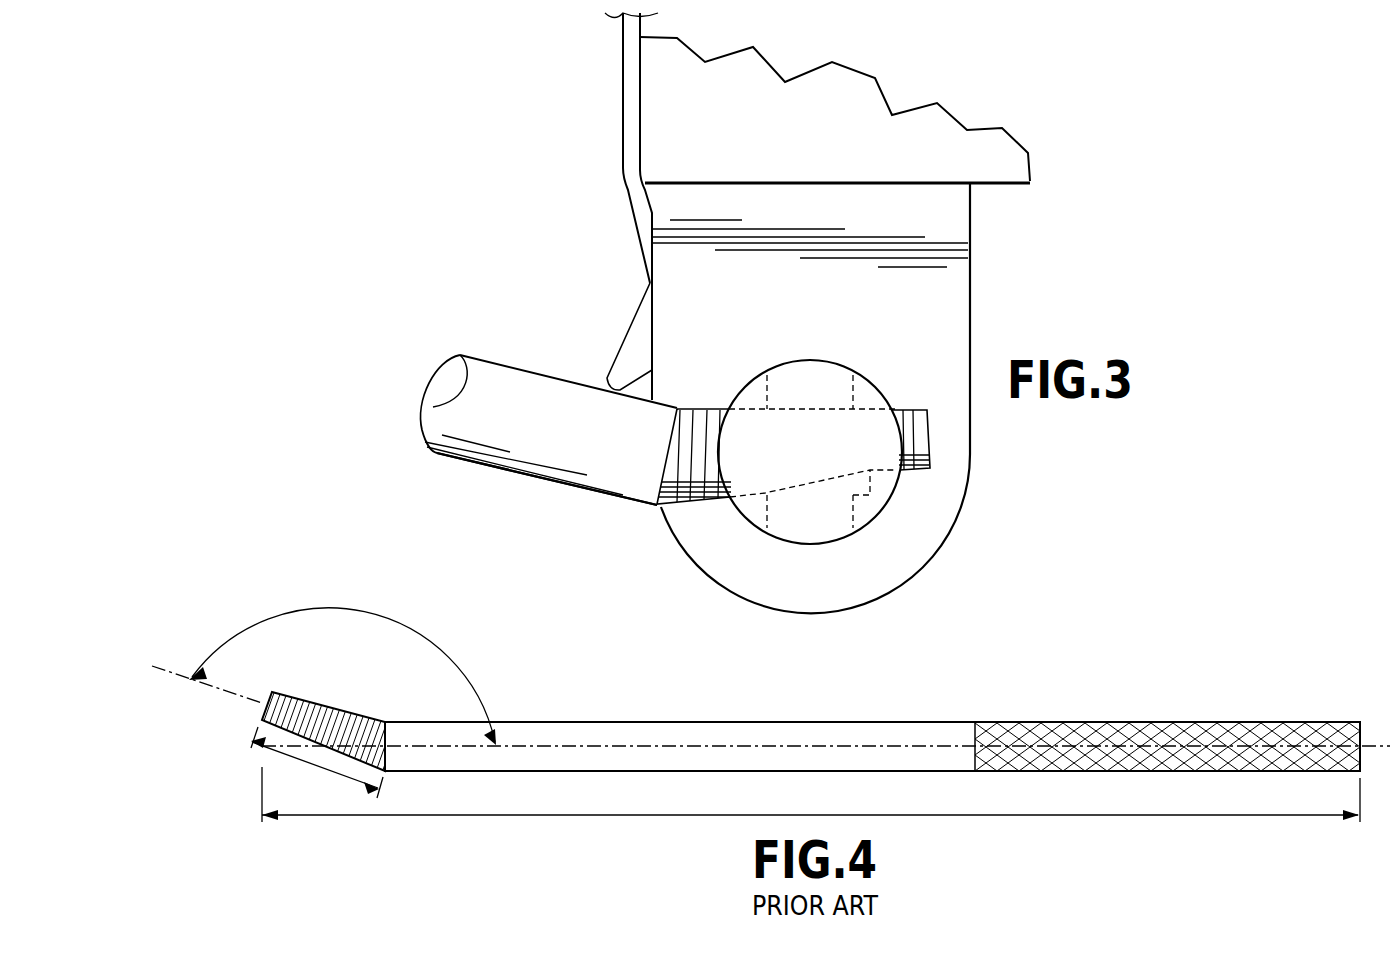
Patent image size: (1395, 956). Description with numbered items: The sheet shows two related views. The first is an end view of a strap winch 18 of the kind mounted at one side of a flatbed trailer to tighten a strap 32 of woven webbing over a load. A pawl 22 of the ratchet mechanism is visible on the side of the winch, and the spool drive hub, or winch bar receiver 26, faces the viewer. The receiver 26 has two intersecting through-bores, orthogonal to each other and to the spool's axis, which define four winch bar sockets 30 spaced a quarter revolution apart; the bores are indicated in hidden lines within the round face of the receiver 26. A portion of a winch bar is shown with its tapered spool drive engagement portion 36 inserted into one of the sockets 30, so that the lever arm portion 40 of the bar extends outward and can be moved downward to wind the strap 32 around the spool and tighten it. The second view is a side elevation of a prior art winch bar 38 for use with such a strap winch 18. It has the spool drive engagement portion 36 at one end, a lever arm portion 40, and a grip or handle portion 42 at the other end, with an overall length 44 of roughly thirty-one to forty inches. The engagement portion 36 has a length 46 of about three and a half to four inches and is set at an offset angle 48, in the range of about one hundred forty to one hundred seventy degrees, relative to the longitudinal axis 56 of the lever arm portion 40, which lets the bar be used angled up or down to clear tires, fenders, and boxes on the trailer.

In FIG. 3, the strap winch 18 is at (992, 307).
In FIG. 3, the pawl 22 is at (630, 322).
In FIG. 3, the winch bar receiver 26 is at (810, 360).
In FIG. 3, the winch bar sockets 30 is at (871, 470).
In FIG. 3, the strap 32 is at (622, 75).
In FIG. 3, the spool drive engagement portion 36 is at (705, 408).
In FIG. 4, the spool drive engagement portion 36 is at (332, 706).
In FIG. 3, the winch bar 38 is at (541, 496).
In FIG. 4, the winch bar 38 is at (905, 711).
In FIG. 3, the lever arm portion 40 is at (513, 368).
In FIG. 4, the lever arm portion 40 is at (700, 722).
In FIG. 4, the handle portion 42 is at (1203, 722).
In FIG. 4, the length 44 is at (660, 816).
In FIG. 4, the length 46 is at (303, 756).
In FIG. 4, the offset angle 48 is at (367, 608).
In FIG. 4, the axis 56 is at (218, 692).